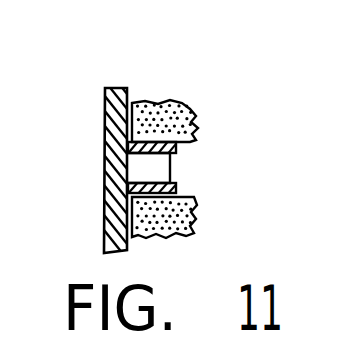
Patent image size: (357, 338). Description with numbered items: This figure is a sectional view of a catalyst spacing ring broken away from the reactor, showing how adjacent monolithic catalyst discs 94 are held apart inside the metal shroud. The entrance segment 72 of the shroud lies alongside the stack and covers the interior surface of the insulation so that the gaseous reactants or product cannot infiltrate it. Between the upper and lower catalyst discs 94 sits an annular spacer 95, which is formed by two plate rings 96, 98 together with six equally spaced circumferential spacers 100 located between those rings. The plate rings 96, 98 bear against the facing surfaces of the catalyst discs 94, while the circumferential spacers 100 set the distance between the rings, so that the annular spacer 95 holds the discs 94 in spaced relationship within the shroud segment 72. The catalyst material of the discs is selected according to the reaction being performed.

The entrance segment 72 is at (106, 147).
The monolithic catalyst disc 94 is at (188, 108).
The annular spacer 95 is at (290, 139).
The plate ring 96 is at (177, 185).
The plate ring 98 is at (178, 148).
The circumferential spacer 100 is at (171, 167).